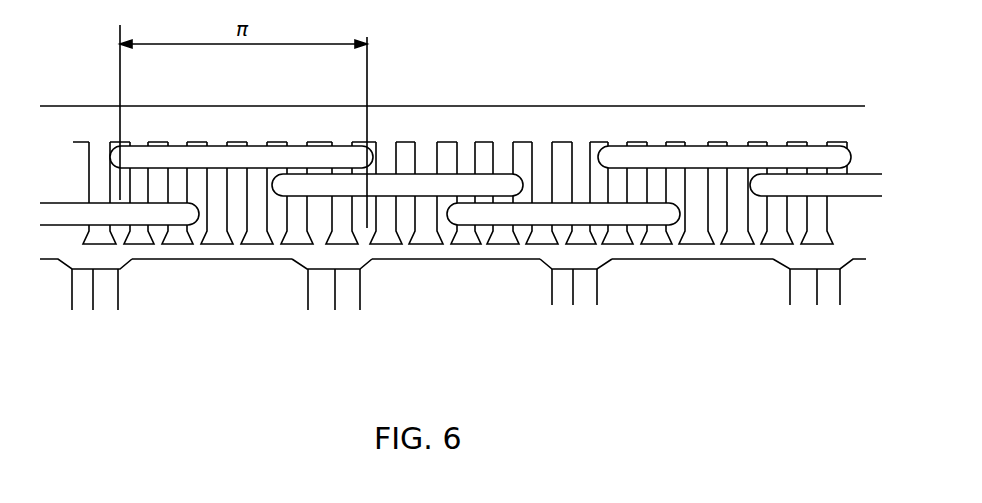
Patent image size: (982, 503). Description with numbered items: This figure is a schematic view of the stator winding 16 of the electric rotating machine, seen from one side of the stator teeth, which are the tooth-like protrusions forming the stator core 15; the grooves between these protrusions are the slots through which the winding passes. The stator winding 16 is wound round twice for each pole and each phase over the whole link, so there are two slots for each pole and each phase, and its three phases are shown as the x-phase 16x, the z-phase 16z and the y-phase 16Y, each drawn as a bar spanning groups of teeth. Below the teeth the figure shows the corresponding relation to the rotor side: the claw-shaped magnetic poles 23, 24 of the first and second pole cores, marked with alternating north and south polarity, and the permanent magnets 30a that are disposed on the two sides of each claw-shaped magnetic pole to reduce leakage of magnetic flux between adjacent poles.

The stator core 15 is at (719, 107).
The stator winding 16 is at (547, 62).
The x-phase of the stator winding 16x is at (346, 156).
The z-phase of the stator winding 16z is at (427, 181).
The y-phase of the stator winding 16Y is at (542, 213).
The claw-shaped magnetic pole 23 is at (182, 292).
The claw-shaped magnetic pole 24 is at (490, 297).
The permanent magnet 30a is at (353, 297).